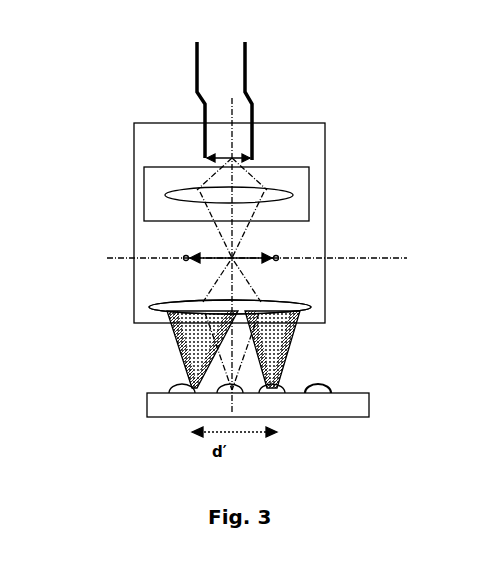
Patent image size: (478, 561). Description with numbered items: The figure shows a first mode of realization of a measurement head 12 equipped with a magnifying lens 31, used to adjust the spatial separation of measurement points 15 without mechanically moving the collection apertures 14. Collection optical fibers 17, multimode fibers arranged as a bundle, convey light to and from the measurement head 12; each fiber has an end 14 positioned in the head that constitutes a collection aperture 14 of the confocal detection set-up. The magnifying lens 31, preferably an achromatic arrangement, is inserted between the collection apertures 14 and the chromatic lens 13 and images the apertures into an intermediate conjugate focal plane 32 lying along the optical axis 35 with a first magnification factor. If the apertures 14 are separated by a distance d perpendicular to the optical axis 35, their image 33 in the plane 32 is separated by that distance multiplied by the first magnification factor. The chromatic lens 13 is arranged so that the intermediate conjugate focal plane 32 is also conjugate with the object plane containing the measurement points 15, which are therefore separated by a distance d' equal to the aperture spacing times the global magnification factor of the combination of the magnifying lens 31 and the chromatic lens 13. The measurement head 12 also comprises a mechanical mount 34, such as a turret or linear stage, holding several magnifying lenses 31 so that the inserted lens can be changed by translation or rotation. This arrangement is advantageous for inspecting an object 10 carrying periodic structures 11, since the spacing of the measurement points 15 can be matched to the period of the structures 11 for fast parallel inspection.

The object 10 is at (369, 407).
The periodic structures 11 is at (333, 388).
The measurement head 12 is at (325, 140).
The chromatic lens 13 is at (150, 307).
The collection aperture 14 is at (250, 158).
The measurement points 15 is at (194, 395).
The collection optical fiber 17 is at (196, 96).
The magnifying lens 31 is at (165, 195).
The intermediate conjugate focal plane 32 is at (110, 258).
The image of the collection apertures 33 is at (278, 258).
The mechanical mount 34 is at (309, 196).
The optical axis 35 is at (253, 292).